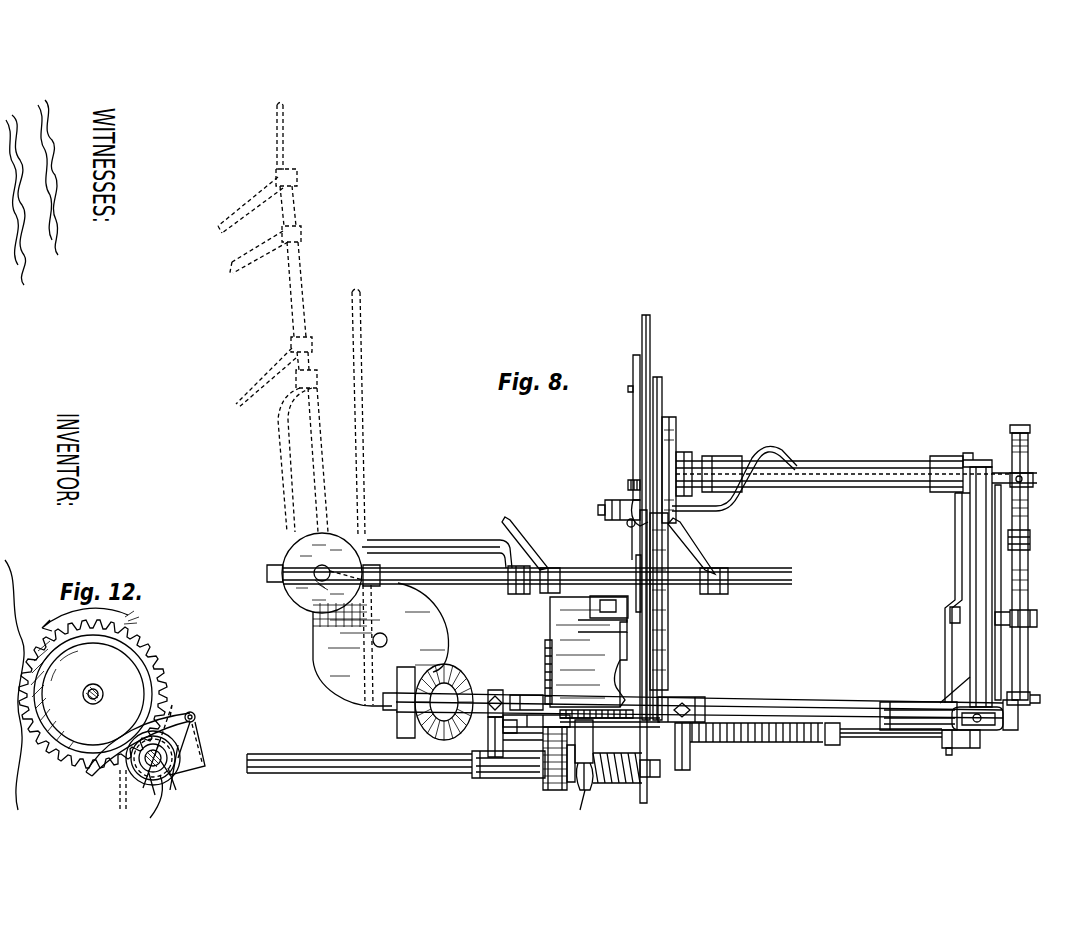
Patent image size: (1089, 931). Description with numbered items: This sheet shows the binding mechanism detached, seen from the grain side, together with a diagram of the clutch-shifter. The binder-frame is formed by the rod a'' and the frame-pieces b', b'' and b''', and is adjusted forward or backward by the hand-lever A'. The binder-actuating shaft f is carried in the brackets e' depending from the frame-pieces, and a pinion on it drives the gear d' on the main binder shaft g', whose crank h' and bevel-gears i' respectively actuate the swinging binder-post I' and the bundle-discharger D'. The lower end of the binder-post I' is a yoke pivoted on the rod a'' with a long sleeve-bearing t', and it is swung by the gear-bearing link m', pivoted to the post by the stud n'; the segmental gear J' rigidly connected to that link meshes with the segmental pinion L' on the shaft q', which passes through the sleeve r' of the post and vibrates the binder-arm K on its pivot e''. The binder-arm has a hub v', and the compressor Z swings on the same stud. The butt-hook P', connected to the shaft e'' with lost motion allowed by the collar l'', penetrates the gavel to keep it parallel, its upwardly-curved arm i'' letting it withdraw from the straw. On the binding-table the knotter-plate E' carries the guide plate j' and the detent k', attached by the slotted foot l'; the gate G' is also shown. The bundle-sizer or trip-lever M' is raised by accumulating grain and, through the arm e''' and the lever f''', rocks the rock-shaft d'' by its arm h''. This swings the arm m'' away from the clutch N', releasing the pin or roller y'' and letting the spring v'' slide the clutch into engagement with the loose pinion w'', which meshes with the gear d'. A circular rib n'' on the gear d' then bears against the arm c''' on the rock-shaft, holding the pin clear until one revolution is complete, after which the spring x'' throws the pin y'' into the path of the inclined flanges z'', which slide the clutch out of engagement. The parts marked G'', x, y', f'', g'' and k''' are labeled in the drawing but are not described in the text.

In FIG. 8, the hand-lever A' is at (300, 404).
In FIG. 8, the bundle-discharger D' is at (421, 561).
In FIG. 8, the binder-actuating shaft f is at (519, 648).
In FIG. 8, the bevel-gears i' is at (393, 661).
In FIG. 8, the binder-frame rod a'' is at (699, 698).
In FIG. 8, the frame-piece b''' is at (504, 691).
In FIG. 8, the frame-piece b'' is at (688, 698).
In FIG. 8, the knotter-plate E' is at (602, 662).
In FIG. 8, the slotted foot l' is at (603, 614).
In FIG. 8, the guide plate j' is at (612, 669).
In FIG. 8, the binder-arm K is at (626, 517).
In FIG. 12, the circular rib segment n'' is at (116, 657).
In FIG. 8, the circular rib segment n'' is at (628, 440).
In FIG. 8, the compressor Z is at (658, 380).
In FIG. 8, the bundle-sizer or trip-lever M' is at (681, 468).
In FIG. 8, the gate G' is at (671, 601).
In FIG. 8, the bar G'' is at (657, 664).
In FIG. 8, the knurled piece x is at (626, 473).
In FIG. 8, the hub of binder-arm v' is at (609, 496).
In FIG. 8, the binder-arm pivot shaft e'' is at (590, 510).
In FIG. 8, the collar l'' is at (615, 531).
In FIG. 8, the link y' is at (606, 543).
In FIG. 8, the detent k' is at (621, 576).
In FIG. 8, the butt-hook P' is at (843, 459).
In FIG. 8, the sleeve of binder-post r' is at (866, 473).
In FIG. 8, the upwardly-curved arm i'' is at (734, 464).
In FIG. 8, the swinging binder-post I' is at (988, 580).
In FIG. 8, the arm e''' is at (968, 598).
In FIG. 8, the plate edge f'' is at (941, 554).
In FIG. 8, the bracket g'' is at (944, 616).
In FIG. 8, the segmental pinion L' is at (1029, 561).
In FIG. 8, the shaft q' is at (1035, 476).
In FIG. 8, the segmental gear J' is at (1027, 543).
In FIG. 8, the stud n' is at (1028, 620).
In FIG. 8, the gear-bearing link m' is at (1022, 592).
In FIG. 8, the crank h' is at (1033, 699).
In FIG. 8, the sleeve-bearing t' is at (918, 702).
In FIG. 8, the frame-piece b' is at (985, 730).
In FIG. 12, the rock-shaft d'' is at (206, 709).
In FIG. 8, the rock-shaft d'' is at (883, 743).
In FIG. 8, the arm on rock-shaft h'' is at (953, 751).
In FIG. 8, the spring x'' is at (756, 745).
In FIG. 8, the bracket e' is at (585, 743).
In FIG. 12, the gear d' is at (93, 688).
In FIG. 8, the gear d' is at (536, 730).
In FIG. 8, the clutch N' is at (556, 772).
In FIG. 8, the pinion w'' is at (547, 780).
In FIG. 12, the arm on rock-shaft c''' is at (138, 740).
In FIG. 8, the arm on rock-shaft c''' is at (517, 774).
In FIG. 12, the arm m'' is at (197, 748).
In FIG. 8, the arm m'' is at (599, 755).
In FIG. 12, the pin or roller y'' is at (179, 787).
In FIG. 8, the pin or roller y'' is at (587, 810).
In FIG. 12, the inclined flanges z'' is at (162, 748).
In FIG. 8, the inclined flanges z'' is at (617, 782).
In FIG. 8, the spring v'' is at (641, 786).
In FIG. 12, the main shaft of binder g' is at (102, 692).
In FIG. 12, the ratchet wheel k''' is at (138, 771).
In FIG. 12, the lever f''' is at (156, 801).